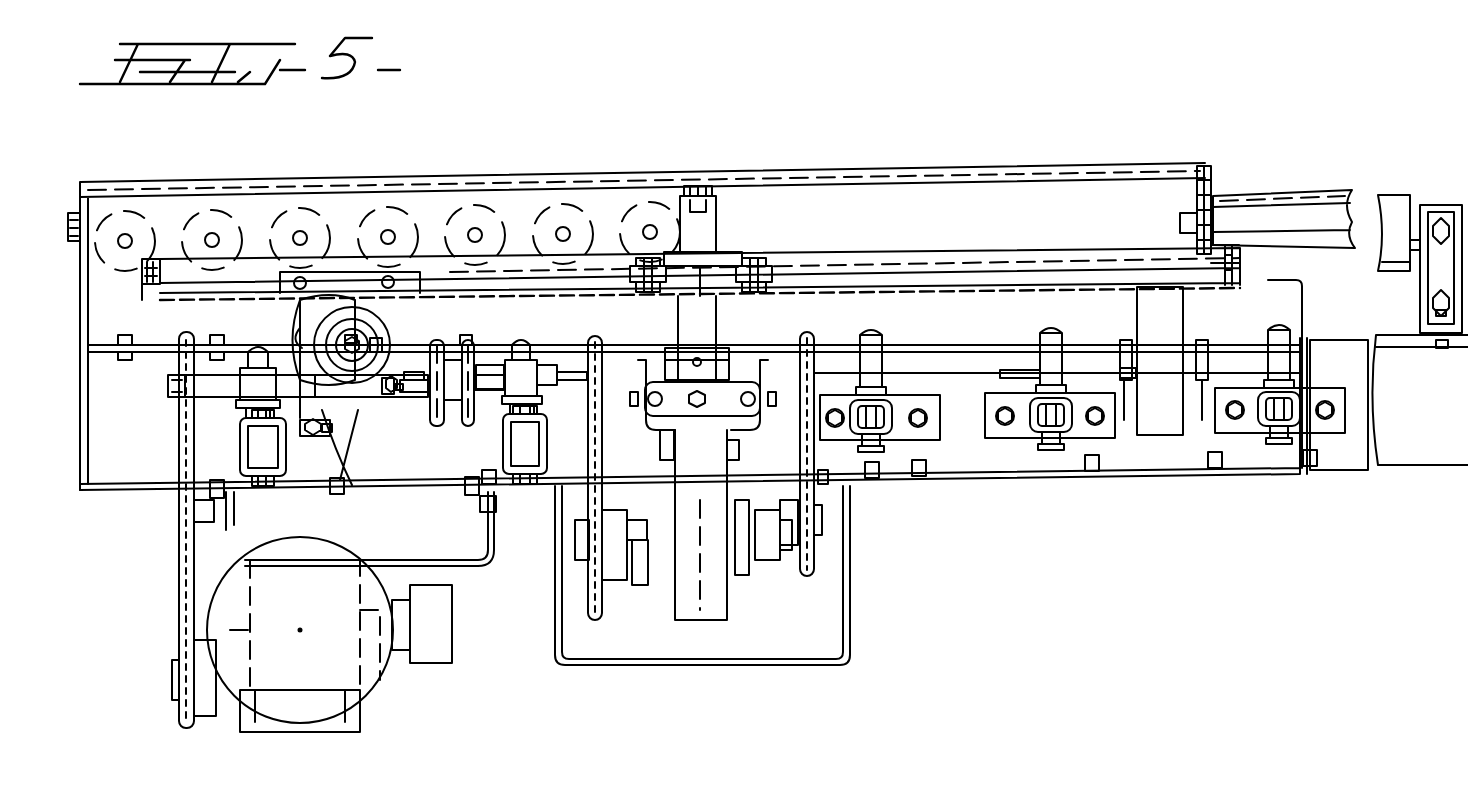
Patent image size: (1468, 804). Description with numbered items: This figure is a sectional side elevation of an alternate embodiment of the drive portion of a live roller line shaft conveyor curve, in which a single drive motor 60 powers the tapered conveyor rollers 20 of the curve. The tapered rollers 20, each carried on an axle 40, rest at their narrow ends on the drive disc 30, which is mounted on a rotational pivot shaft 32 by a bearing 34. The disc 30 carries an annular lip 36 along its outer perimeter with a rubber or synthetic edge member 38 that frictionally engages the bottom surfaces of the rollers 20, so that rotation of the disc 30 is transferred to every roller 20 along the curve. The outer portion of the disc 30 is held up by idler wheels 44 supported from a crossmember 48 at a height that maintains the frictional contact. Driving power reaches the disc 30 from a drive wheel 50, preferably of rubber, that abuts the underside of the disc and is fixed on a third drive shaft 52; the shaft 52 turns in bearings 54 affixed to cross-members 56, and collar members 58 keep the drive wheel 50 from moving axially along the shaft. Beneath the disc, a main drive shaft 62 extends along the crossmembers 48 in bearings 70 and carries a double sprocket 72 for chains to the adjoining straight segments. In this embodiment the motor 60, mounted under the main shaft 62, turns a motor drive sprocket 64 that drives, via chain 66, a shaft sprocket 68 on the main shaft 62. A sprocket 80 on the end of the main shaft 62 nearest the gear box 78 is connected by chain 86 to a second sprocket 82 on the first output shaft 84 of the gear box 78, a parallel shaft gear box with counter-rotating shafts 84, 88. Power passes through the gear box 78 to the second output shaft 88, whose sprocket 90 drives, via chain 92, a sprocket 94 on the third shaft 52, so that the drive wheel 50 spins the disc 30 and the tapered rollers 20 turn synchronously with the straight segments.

The tapered conveyor rollers 20 is at (1325, 205).
The drive disc 30 is at (920, 278).
The rotational pivot shaft 32 is at (715, 228).
The bearing 34 is at (735, 250).
The annular lip 36 is at (1238, 288).
The edge member 38 is at (1238, 248).
The axle 40 is at (1180, 218).
The idler wheels 44 is at (300, 320).
The crossmember 48 is at (286, 440).
The drive wheel 50 is at (1160, 420).
The third drive shaft 52 is at (958, 365).
The bearings 54 is at (878, 345).
The cross-members 56 is at (890, 435).
The collar members 58 is at (1125, 420).
The drive motor 60 is at (345, 720).
The main drive shaft 62 is at (345, 485).
The motor drive sprocket 64 is at (178, 700).
The chain 66 is at (178, 520).
The shaft sprocket 68 is at (170, 372).
The bearings 70 is at (240, 385).
The double sprocket 72 is at (455, 345).
The gear box 78 is at (702, 610).
The sprocket 80 is at (600, 345).
The second sprocket 82 is at (588, 610).
The first output shaft 84 is at (630, 545).
The chain 86 is at (642, 425).
The second output shaft 88 is at (765, 540).
The sprocket 90 is at (815, 555).
The chain 92 is at (832, 480).
The sprocket 94 is at (795, 335).